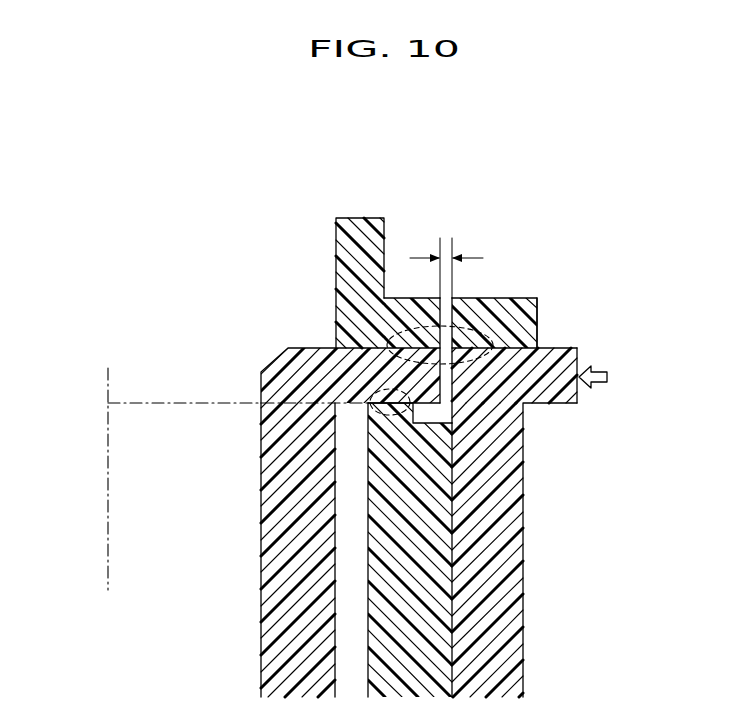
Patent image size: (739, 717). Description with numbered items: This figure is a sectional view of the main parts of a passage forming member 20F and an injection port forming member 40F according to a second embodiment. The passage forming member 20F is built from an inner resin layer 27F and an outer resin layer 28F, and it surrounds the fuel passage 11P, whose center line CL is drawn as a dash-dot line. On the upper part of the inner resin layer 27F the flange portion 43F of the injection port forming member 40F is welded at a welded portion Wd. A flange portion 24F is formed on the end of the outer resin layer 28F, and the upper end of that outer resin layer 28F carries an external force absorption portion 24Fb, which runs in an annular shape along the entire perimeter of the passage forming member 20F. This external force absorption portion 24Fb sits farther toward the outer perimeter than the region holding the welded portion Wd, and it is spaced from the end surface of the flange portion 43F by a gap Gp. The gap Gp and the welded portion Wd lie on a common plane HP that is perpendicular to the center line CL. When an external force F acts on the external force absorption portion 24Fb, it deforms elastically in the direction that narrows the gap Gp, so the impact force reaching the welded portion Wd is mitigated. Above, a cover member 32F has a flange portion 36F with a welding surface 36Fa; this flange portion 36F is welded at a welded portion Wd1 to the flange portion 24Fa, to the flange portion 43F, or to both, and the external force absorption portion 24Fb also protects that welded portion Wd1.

The fuel passage 11P is at (202, 562).
The passage forming member 20F is at (523, 652).
The flange portion 24F is at (568, 404).
The flange portion 24Fa is at (548, 347).
The external force absorption portion 24Fb is at (580, 358).
The inner resin layer 27F is at (453, 593).
The outer resin layer 28F is at (523, 530).
The cover member 32F is at (357, 222).
The flange portion 36F is at (490, 312).
The welding surface 36Fa is at (540, 341).
The injection port forming member 40F is at (261, 467).
The flange portion 43F is at (360, 367).
The gap Gp is at (446, 315).
The welded portion Wd is at (375, 393).
The welded portion Wd1 is at (484, 345).
The external force F is at (595, 364).
The common plane HP is at (152, 400).
The center line CL is at (103, 382).